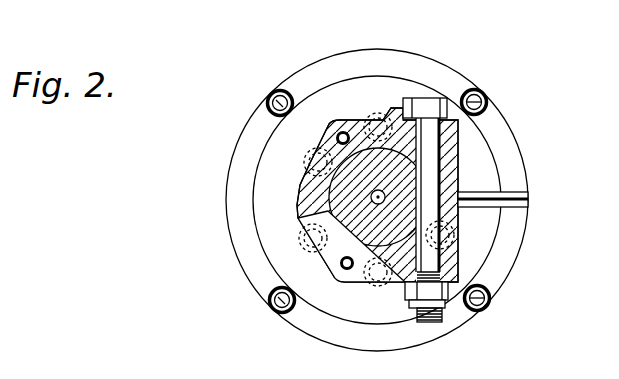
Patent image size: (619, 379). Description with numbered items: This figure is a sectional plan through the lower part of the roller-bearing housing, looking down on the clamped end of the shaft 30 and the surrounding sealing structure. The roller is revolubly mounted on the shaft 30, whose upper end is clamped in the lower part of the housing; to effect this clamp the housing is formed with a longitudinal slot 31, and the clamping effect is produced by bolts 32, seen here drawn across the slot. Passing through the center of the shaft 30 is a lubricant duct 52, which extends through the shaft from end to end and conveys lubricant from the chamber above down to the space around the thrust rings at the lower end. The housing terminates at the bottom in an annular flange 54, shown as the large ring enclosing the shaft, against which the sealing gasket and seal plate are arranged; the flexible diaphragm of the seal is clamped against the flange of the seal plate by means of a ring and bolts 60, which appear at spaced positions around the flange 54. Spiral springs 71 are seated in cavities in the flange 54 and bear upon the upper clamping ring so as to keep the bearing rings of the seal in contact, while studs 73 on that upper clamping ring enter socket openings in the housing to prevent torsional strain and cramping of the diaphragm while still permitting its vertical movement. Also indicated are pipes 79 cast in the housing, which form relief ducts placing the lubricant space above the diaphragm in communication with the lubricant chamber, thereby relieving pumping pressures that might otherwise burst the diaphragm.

The shaft 30 is at (345, 210).
The longitudinal slot 31 is at (528, 197).
The bolts 32 is at (427, 297).
The lubricant duct 52 is at (392, 202).
The annular flange 54 is at (278, 260).
The bolts 60 is at (267, 104).
The spiral springs 71 is at (380, 108).
The studs 73 is at (306, 164).
The pipes 79 is at (341, 132).